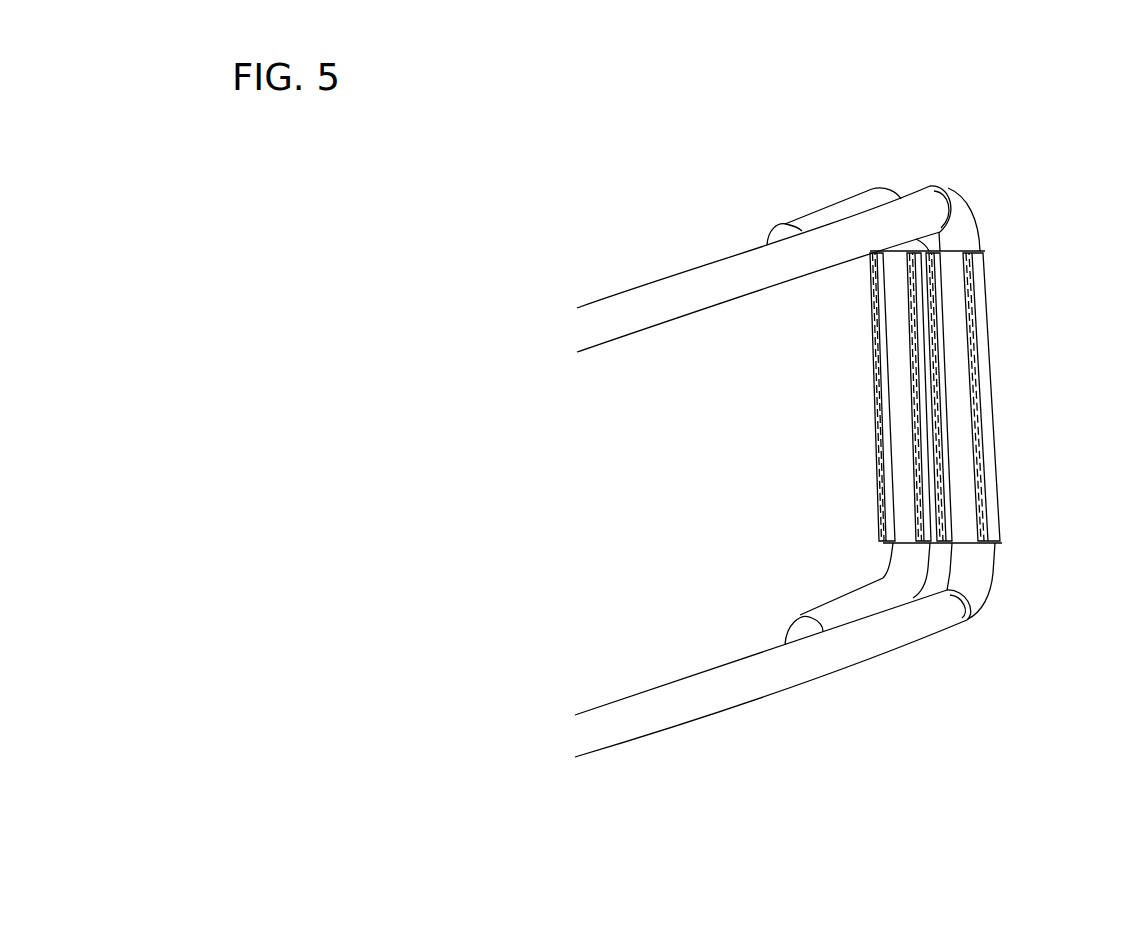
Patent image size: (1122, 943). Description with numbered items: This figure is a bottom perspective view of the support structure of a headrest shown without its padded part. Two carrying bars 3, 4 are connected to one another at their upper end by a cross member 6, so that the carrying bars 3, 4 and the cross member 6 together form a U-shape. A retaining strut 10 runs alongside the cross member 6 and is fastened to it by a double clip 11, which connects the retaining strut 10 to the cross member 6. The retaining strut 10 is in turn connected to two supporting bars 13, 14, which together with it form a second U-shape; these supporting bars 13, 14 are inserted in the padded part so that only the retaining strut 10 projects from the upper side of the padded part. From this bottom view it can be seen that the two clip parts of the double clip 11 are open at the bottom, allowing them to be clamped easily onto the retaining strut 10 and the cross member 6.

The carrying bar 3 is at (592, 732).
The carrying bar 4 is at (622, 312).
The cross member 6 is at (962, 463).
The retaining strut 10 is at (902, 448).
The double clip 11 is at (993, 372).
The supporting bar 13 is at (838, 610).
The supporting bar 14 is at (812, 210).